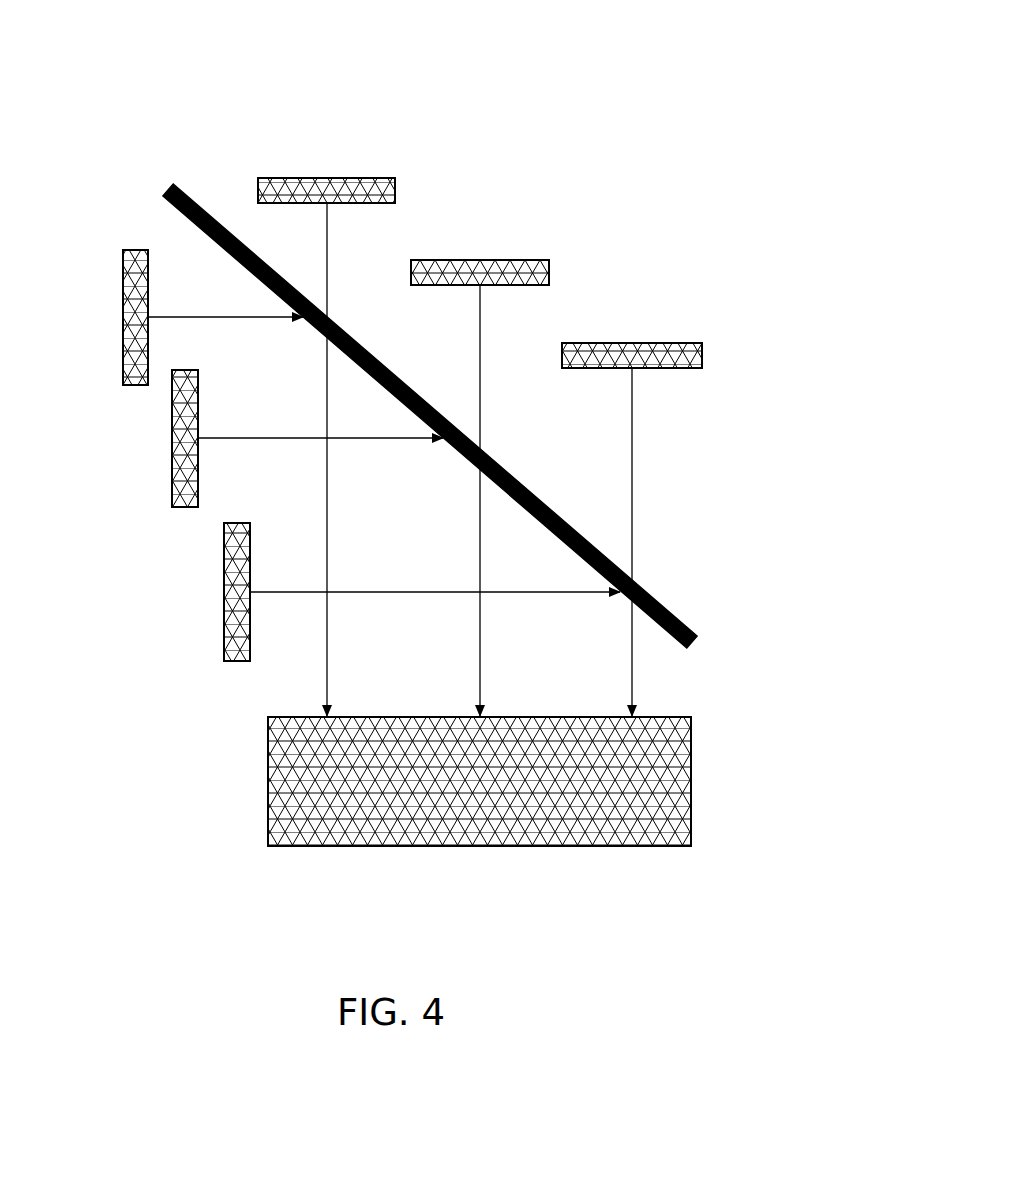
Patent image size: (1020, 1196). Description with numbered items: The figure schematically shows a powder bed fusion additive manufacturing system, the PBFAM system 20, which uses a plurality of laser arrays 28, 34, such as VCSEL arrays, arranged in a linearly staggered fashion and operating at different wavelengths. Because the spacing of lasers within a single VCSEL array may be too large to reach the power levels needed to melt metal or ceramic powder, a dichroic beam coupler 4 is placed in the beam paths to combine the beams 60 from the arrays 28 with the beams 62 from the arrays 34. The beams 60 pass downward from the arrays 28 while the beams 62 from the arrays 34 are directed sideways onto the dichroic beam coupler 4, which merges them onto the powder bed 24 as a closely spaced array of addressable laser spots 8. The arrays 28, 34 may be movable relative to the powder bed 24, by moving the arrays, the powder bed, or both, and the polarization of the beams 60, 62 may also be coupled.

The PBFAM system 20 is at (626, 80).
The dichroic beam coupler 4 is at (549, 508).
The 2D laser array 28 is at (332, 178).
The 2D laser array 34 is at (123, 317).
The laser beam 62 is at (181, 317).
The laser beam 60 is at (327, 522).
The laser spot 8 is at (691, 780).
The powder bed 24 is at (414, 717).